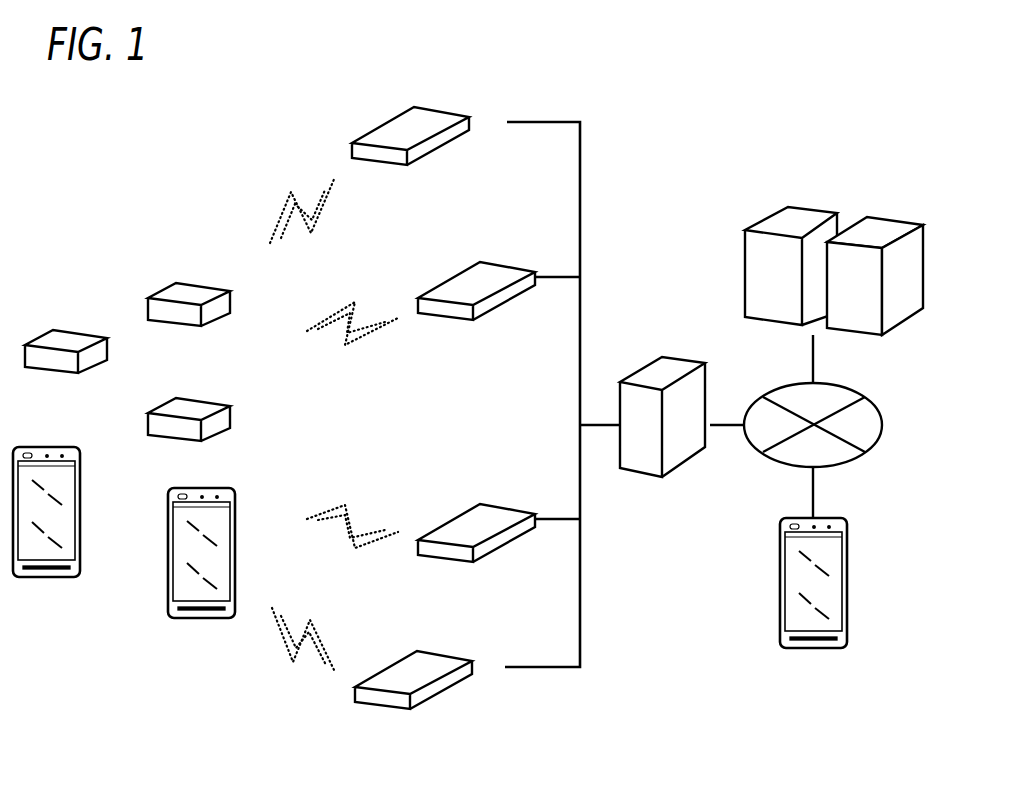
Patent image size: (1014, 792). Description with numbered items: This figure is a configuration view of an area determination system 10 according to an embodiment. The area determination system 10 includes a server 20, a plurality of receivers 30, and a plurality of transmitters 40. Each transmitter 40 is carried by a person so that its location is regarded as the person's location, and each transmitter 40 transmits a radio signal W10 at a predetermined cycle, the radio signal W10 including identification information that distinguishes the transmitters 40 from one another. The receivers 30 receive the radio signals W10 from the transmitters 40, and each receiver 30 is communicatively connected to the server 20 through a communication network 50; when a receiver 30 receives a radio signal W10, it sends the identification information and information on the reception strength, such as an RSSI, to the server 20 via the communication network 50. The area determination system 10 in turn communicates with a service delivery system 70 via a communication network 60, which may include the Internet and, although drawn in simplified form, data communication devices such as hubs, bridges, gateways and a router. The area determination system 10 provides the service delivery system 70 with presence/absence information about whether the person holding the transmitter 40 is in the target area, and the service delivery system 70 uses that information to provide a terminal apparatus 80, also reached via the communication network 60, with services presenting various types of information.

The area determination system 10 is at (591, 95).
The server 20 is at (675, 362).
The receiver 30 is at (388, 133).
The transmitter 40 is at (43, 342).
The communication network 50 is at (580, 300).
The communication network 60 is at (883, 420).
The service delivery system 70 is at (852, 215).
The terminal apparatus 80 is at (838, 600).
The radio signal W10 is at (290, 210).